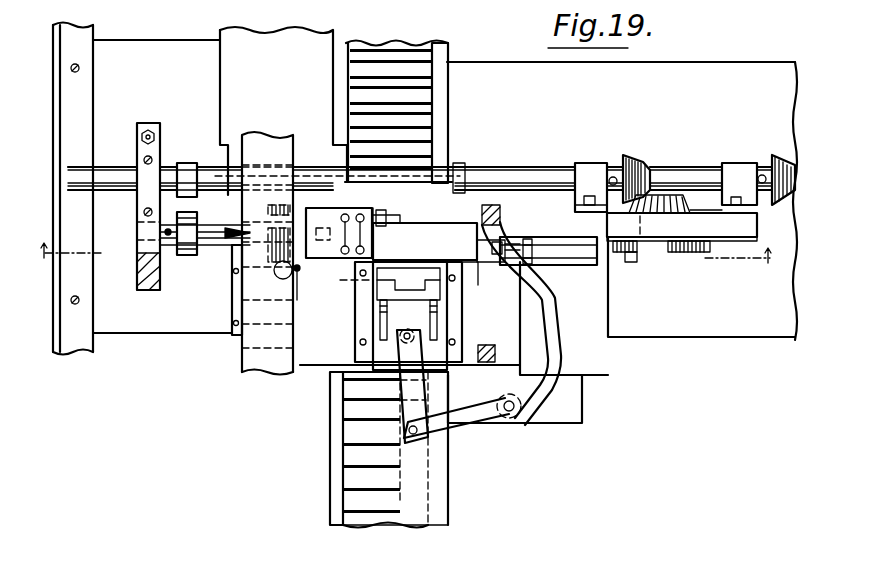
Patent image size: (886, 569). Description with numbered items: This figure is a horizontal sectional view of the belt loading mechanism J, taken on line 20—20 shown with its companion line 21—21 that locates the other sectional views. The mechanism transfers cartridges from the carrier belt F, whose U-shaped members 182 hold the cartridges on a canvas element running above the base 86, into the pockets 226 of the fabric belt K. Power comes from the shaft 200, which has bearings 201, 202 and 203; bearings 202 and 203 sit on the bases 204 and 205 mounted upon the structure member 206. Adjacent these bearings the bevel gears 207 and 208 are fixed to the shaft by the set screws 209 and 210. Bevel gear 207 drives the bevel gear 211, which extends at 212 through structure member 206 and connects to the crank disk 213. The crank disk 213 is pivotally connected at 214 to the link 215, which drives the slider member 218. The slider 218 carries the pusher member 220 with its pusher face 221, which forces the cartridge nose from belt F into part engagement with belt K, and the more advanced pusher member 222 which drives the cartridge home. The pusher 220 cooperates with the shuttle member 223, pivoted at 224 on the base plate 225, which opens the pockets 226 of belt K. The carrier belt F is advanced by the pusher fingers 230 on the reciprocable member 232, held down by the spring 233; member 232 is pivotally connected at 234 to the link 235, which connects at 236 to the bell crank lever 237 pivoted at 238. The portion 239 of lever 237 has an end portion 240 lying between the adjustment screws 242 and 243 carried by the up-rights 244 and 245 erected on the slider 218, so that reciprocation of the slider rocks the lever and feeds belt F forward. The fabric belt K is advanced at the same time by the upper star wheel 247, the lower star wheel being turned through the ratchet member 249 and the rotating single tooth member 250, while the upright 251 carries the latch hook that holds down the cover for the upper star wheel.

The section line 20— 20 is at (403, 254).
The section line 21— 21 is at (378, 185).
The base 86 is at (665, 323).
The U-shaped members 182 is at (390, 500).
The shaft 200 is at (518, 174).
The bearing 201 is at (137, 198).
The bearing 202 is at (584, 163).
The bearing 203 is at (735, 164).
The base 204 is at (582, 206).
The base 205 is at (722, 214).
The structure member 206 is at (718, 231).
The bevel gear 207 is at (647, 166).
The bevel gear 208 is at (782, 202).
The set screw 209 is at (615, 177).
The set screw 210 is at (763, 175).
The bevel gear 211 is at (668, 200).
The extension of bevel gear 212 is at (676, 224).
The crank disk 213 is at (692, 252).
The pivotal connection 214 is at (631, 262).
The link 215 is at (580, 252).
The slider member 218 is at (479, 258).
The pusher member 220 is at (408, 233).
The pusher face 221 is at (383, 235).
The advanced pusher member 222 is at (322, 240).
The shuttle member 223 is at (280, 279).
The pivot 224 is at (296, 280).
The base plate 225 is at (233, 310).
The pockets 226 is at (250, 368).
The pusher fingers 230 is at (390, 292).
The reciprocable member 232 is at (455, 352).
The spring 233 is at (383, 308).
The pivotal connection 234 is at (402, 342).
The link 235 is at (405, 392).
The connection 236 is at (420, 436).
The bell crank lever 237 is at (480, 418).
The pivot 238 is at (515, 407).
The portion of lever 239 is at (541, 347).
The end portion 240 is at (492, 240).
The adjustment screw 242 is at (505, 252).
The adjustment screw 243 is at (482, 225).
The upright 244 is at (530, 245).
The upright 245 is at (460, 252).
The upper star wheel 247 is at (283, 213).
The ratchet member 249 is at (187, 255).
The rotating single tooth member 250 is at (188, 163).
The upright 251 is at (148, 290).
The belt loading mechanism J is at (505, 149).
The fabric belt K is at (275, 380).
The carrier belt F is at (368, 515).